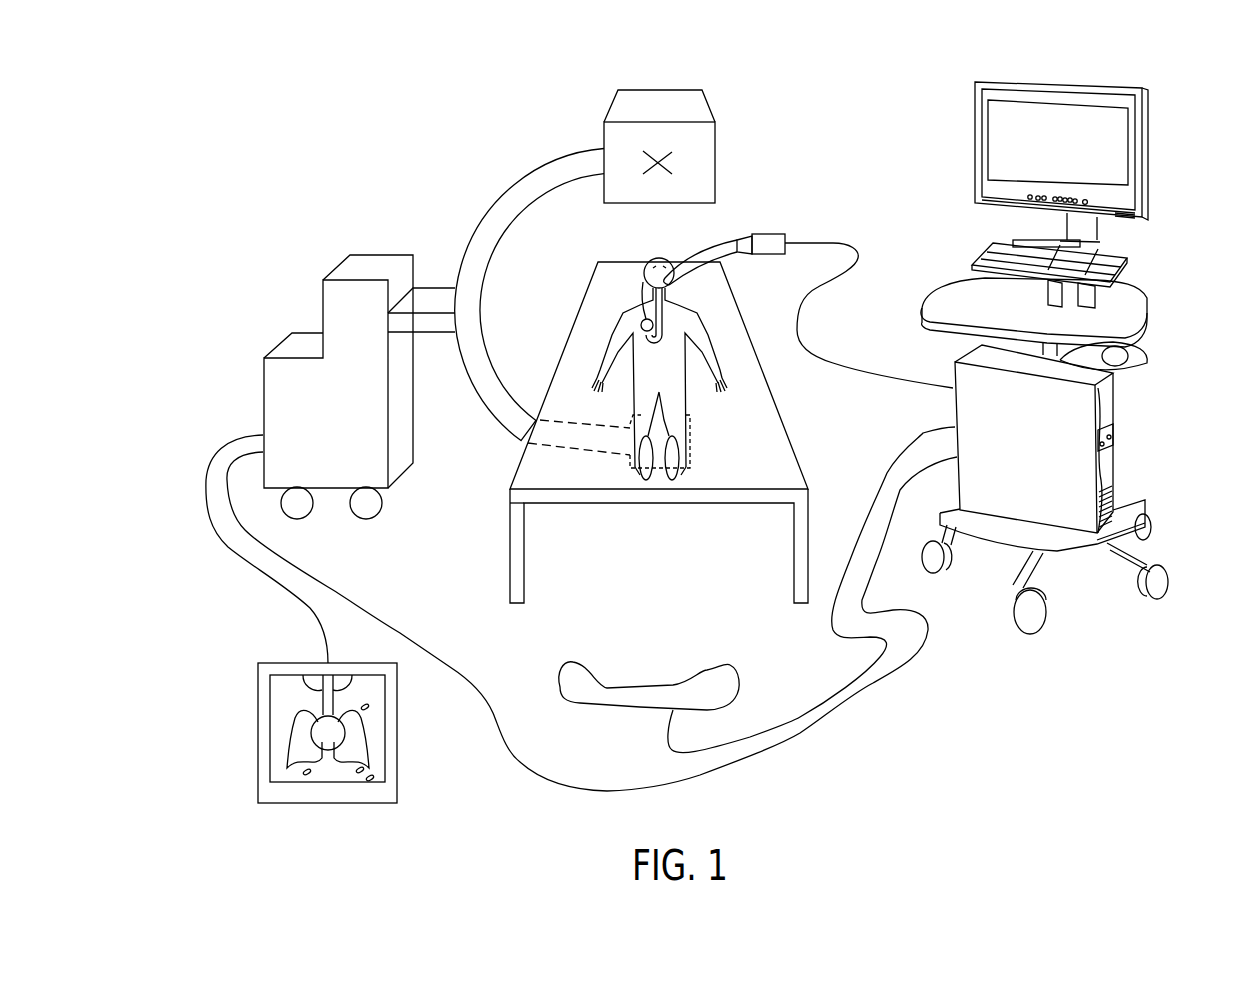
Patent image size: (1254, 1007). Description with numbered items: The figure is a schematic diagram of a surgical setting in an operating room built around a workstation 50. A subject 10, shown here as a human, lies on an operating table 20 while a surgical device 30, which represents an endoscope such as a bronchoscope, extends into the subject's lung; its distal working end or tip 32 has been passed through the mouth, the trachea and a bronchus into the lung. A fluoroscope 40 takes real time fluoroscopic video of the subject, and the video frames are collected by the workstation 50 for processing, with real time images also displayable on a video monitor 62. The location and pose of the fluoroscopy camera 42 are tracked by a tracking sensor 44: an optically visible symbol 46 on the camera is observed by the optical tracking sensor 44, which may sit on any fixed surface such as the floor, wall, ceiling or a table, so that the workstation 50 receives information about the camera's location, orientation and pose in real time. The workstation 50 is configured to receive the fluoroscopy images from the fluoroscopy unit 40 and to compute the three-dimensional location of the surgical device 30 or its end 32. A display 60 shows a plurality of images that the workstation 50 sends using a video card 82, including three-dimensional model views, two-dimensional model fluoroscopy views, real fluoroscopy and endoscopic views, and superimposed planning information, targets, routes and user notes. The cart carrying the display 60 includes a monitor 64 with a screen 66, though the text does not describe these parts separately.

The subject 10 is at (620, 322).
The operating table 20 is at (593, 505).
The surgical device 30 is at (718, 242).
The distal working end 32 is at (643, 280).
The fluoroscope 40 is at (513, 180).
The fluoroscopy camera 42 is at (648, 103).
The tracking sensor 44 is at (700, 678).
The optically visible symbol 46 is at (670, 153).
The workstation 50 is at (1115, 413).
The display 60 is at (1148, 140).
The video monitor 62 is at (258, 733).
The monitor 64 is at (1000, 92).
The screen 66 is at (1102, 125).
The video card 82 is at (1128, 255).